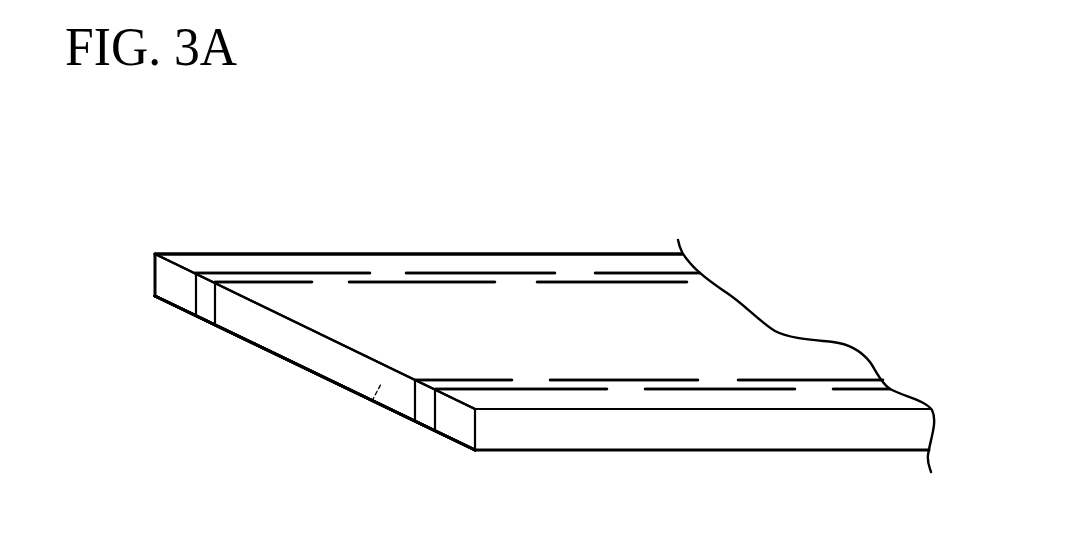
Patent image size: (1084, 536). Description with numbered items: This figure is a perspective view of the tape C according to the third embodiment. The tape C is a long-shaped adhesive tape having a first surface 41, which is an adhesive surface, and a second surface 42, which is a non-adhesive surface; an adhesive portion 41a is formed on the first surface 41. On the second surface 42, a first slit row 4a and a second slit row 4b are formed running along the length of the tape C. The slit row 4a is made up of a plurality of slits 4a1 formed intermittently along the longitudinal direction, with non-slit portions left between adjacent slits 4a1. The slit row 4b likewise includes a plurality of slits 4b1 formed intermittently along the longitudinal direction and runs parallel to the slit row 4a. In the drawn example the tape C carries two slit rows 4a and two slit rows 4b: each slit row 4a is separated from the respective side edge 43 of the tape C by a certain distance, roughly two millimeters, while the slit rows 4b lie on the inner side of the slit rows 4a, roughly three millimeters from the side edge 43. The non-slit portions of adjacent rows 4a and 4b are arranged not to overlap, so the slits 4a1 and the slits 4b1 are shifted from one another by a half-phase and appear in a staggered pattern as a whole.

The tape C is at (255, 253).
The slit 4a1 is at (418, 273).
The first slit row 4a is at (542, 293).
The slit 4b1 is at (473, 282).
The second slit row 4b is at (549, 293).
The first surface 41 is at (372, 403).
The adhesive portion 41a is at (315, 399).
The second surface 42 is at (374, 345).
The side edge 43 is at (536, 432).